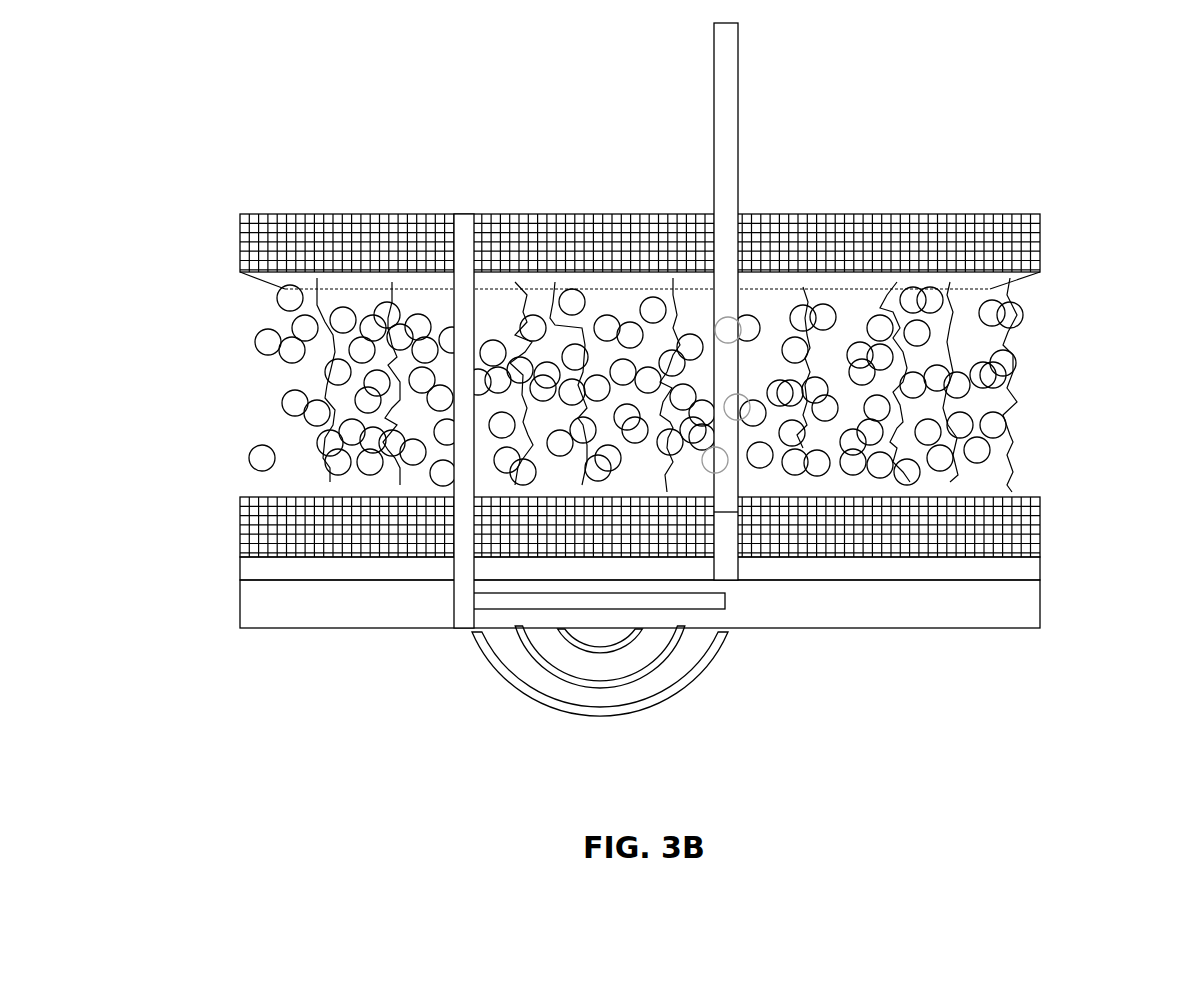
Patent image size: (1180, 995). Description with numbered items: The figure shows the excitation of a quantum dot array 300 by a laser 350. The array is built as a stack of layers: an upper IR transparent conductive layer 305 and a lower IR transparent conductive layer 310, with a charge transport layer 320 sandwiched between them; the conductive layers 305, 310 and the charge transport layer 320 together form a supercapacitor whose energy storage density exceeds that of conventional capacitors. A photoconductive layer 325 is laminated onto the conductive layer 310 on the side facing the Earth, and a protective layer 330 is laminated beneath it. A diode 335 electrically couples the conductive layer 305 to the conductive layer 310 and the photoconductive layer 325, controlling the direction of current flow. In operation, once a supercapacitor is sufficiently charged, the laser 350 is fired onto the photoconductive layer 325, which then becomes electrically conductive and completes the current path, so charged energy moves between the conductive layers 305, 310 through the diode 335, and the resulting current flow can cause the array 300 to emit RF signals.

The quantum dot array 300 is at (203, 801).
The IR transparent conductive layer 305 is at (1040, 226).
The IR transparent conductive layer 310 is at (1040, 502).
The charge transport layer 320 is at (1056, 267).
The photoconductive layer 325 is at (1040, 560).
The protective layer 330 is at (1040, 615).
The diode 335 is at (465, 218).
The laser 350 is at (738, 108).